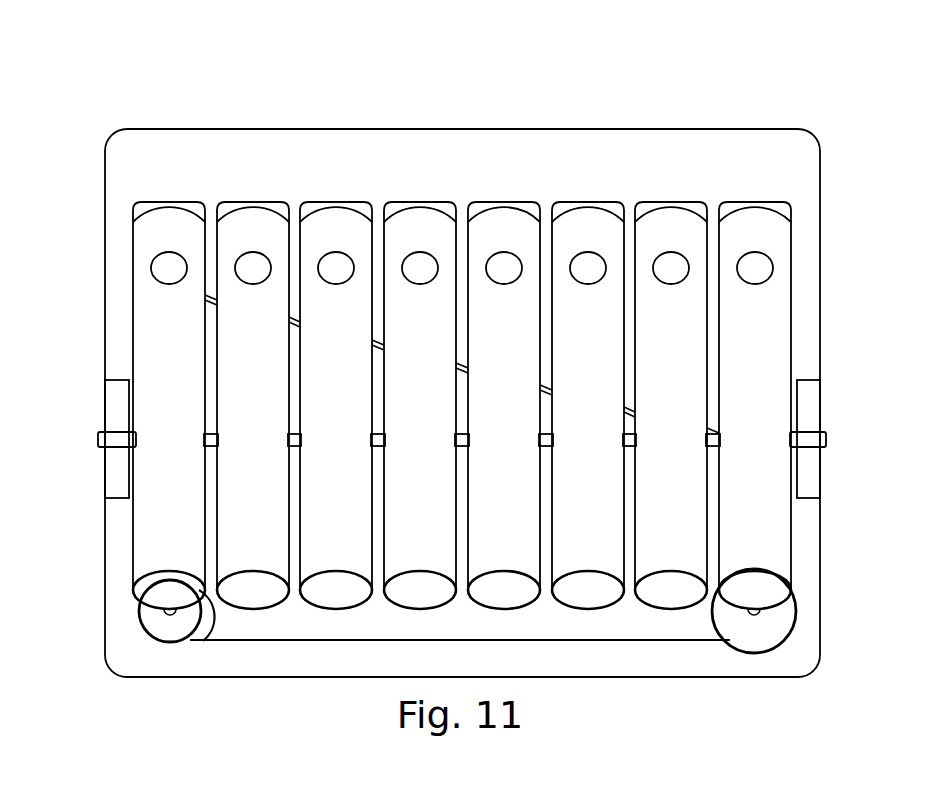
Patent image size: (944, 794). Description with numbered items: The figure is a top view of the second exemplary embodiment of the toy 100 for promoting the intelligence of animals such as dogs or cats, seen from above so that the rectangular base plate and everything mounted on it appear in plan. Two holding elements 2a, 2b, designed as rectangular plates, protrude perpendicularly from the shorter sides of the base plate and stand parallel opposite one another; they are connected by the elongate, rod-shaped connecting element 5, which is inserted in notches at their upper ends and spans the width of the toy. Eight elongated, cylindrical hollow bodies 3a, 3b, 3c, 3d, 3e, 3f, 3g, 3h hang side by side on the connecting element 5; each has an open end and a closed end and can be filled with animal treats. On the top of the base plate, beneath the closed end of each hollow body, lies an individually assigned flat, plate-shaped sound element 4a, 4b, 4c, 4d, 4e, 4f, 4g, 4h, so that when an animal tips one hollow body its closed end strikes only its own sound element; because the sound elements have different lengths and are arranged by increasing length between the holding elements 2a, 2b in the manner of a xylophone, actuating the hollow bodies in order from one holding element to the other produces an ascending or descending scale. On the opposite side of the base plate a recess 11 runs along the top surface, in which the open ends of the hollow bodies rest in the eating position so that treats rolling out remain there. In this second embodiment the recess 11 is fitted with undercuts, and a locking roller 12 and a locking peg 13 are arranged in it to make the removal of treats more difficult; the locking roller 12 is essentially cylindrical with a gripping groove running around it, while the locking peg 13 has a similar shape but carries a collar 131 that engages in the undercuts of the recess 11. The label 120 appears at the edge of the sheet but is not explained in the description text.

The toy 100 is at (110, 95).
The housing 120 is at (603, 5).
The recess 11 is at (648, 627).
The locking roller 12 is at (766, 631).
The locking peg 13 is at (172, 628).
The collar 131 is at (204, 622).
The holding element 2a is at (817, 408).
The holding element 2b is at (128, 477).
The connecting element 5 is at (806, 436).
The hollow body 3a is at (183, 233).
The hollow body 3b is at (272, 233).
The hollow body 3c is at (355, 233).
The hollow body 3d is at (440, 233).
The hollow body 3e is at (523, 233).
The hollow body 3f is at (600, 233).
The hollow body 3g is at (681, 233).
The hollow body 3h is at (764, 233).
The sound element 4a is at (160, 208).
The sound element 4b is at (252, 208).
The sound element 4c is at (331, 208).
The sound element 4d is at (416, 208).
The sound element 4e is at (500, 208).
The sound element 4f is at (578, 208).
The sound element 4g is at (660, 208).
The sound element 4h is at (743, 208).